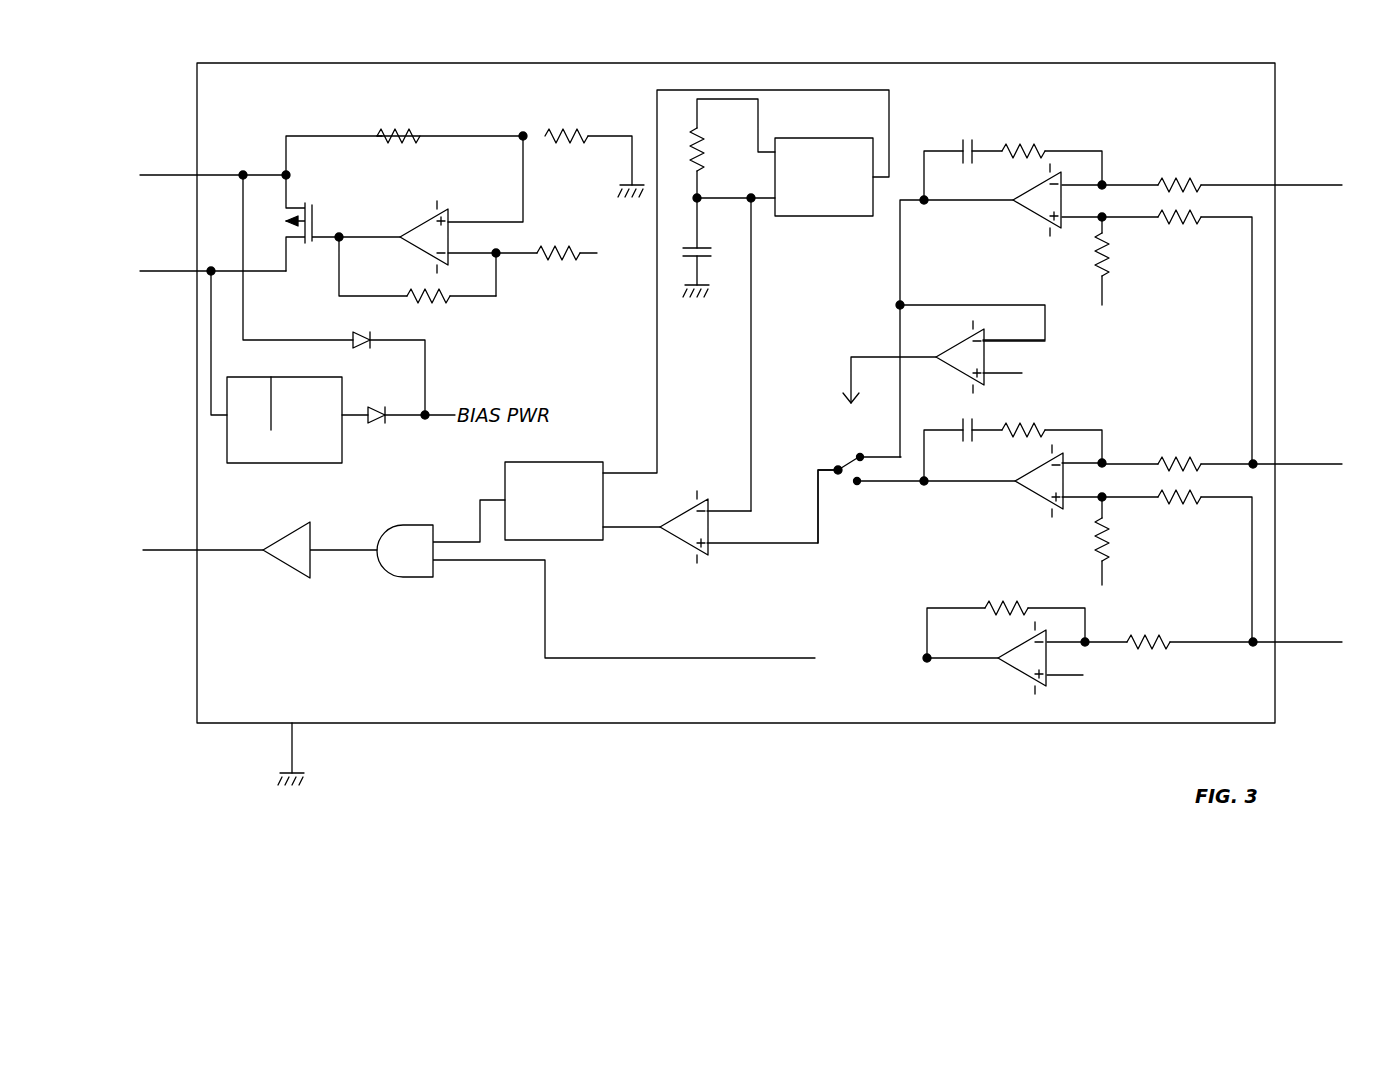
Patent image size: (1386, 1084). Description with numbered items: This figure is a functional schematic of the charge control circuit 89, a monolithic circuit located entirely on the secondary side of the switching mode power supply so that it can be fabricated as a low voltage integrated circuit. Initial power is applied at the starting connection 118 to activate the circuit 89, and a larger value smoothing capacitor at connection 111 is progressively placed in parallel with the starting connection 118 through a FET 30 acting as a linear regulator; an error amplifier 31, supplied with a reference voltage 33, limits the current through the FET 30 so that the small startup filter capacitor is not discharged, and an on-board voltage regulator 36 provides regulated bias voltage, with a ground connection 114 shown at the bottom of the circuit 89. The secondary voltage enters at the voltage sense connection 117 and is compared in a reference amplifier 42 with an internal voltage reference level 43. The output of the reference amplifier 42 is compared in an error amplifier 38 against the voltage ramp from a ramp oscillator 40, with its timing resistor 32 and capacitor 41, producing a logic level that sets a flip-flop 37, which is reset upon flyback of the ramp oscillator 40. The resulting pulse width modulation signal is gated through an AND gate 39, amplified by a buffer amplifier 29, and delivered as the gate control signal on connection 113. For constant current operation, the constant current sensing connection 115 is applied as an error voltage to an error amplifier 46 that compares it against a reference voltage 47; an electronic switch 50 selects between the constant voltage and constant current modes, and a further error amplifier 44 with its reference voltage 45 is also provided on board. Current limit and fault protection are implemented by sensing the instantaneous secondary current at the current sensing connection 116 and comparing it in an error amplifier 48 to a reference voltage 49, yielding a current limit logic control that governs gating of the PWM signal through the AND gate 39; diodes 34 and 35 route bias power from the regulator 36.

The charge control circuit 89 is at (633, 723).
The ground 114 is at (292, 748).
The connection 111 is at (180, 175).
The starting connection 118 is at (182, 271).
The connection 113 is at (170, 548).
The voltage sense connection 117 is at (1282, 185).
The constant current sensing connection 115 is at (1282, 464).
The current sensing connection 116 is at (1282, 642).
The buffer amplifier 29 is at (285, 565).
The FET 30 is at (318, 215).
The error amplifier 31 is at (440, 215).
The resistor R 32 is at (700, 128).
The reference voltage 33 is at (598, 272).
The diode D1 34 is at (368, 345).
The diode D2 35 is at (385, 423).
The on-board voltage regulator 36 is at (342, 437).
The flip-flop 37 is at (582, 458).
The error amplifier 38 is at (680, 548).
The AND gate 39 is at (410, 577).
The ramp oscillator 40 is at (838, 218).
The capacitor C1 41 is at (705, 257).
The reference amplifier 42 is at (1058, 230).
The internal voltage reference level 43 is at (1175, 305).
The error amplifier 44 is at (960, 378).
The reference voltage 45 is at (985, 351).
The error amplifier 46 is at (1045, 500).
The reference voltage 47 is at (1165, 580).
The error amplifier 48 is at (1047, 635).
The reference voltage 49 is at (1150, 678).
The electronic switch 50 is at (843, 487).